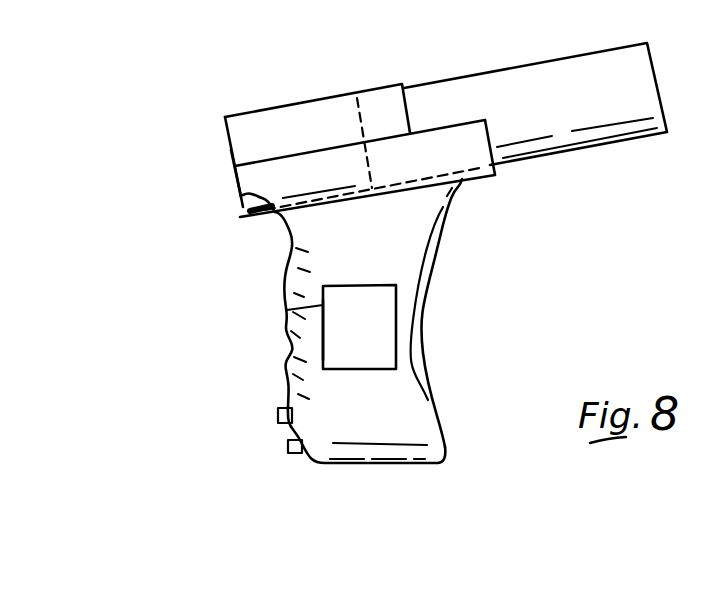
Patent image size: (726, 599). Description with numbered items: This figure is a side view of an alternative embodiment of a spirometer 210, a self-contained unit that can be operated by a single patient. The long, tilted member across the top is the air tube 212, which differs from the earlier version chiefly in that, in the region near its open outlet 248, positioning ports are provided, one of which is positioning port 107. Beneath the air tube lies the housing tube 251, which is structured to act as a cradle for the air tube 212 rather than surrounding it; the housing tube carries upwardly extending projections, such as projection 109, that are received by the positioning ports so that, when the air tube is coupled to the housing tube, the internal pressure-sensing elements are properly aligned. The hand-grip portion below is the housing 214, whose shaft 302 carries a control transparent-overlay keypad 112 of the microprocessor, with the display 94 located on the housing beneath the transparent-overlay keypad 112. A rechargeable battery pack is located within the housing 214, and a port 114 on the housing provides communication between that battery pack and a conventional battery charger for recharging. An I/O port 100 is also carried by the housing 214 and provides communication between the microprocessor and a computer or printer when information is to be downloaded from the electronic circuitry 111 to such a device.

The spirometer 210 is at (180, 122).
The air tube 212 is at (553, 59).
The housing tube 251 is at (458, 150).
The open outlet 248 is at (236, 180).
The positioning port 107 is at (245, 203).
The projection 109 is at (243, 210).
The housing 214 is at (442, 305).
The shaft 302 is at (446, 446).
The transparent-overlay keypad 112 is at (396, 352).
The electronic circuitry 111 is at (312, 344).
The display 94 is at (287, 310).
The port 114 is at (279, 422).
The I/O port 100 is at (290, 452).